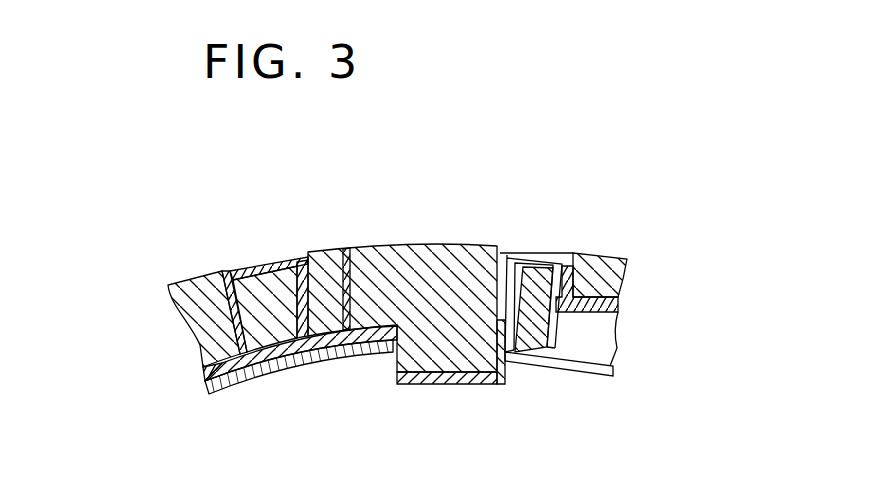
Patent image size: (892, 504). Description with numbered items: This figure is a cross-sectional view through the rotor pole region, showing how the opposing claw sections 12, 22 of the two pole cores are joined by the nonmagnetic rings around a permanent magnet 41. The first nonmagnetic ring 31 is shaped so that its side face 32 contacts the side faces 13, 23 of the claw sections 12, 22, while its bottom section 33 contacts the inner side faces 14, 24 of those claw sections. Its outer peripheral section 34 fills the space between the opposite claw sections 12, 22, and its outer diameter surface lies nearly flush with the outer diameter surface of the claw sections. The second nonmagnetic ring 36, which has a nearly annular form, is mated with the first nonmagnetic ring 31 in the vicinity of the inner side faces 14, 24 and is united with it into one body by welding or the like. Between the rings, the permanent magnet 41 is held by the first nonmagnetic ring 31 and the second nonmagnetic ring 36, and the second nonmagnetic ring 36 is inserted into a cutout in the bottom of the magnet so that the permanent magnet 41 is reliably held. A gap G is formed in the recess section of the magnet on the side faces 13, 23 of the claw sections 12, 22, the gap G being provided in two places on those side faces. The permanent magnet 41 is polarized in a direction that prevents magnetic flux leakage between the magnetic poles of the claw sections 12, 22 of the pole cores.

The claw section 12 is at (432, 262).
The side face 13 is at (306, 264).
The inner side face 14 is at (370, 375).
The claw section 22 is at (170, 284).
The side face 23 is at (228, 270).
The inner side face 24 is at (205, 384).
The first nonmagnetic ring 31 is at (250, 270).
The side face 32 is at (242, 386).
The bottom section 33 is at (348, 272).
The outer peripheral section 34 is at (283, 266).
The second nonmagnetic ring 36 is at (220, 384).
The permanent magnet 41 is at (538, 262).
The gap G is at (508, 360).